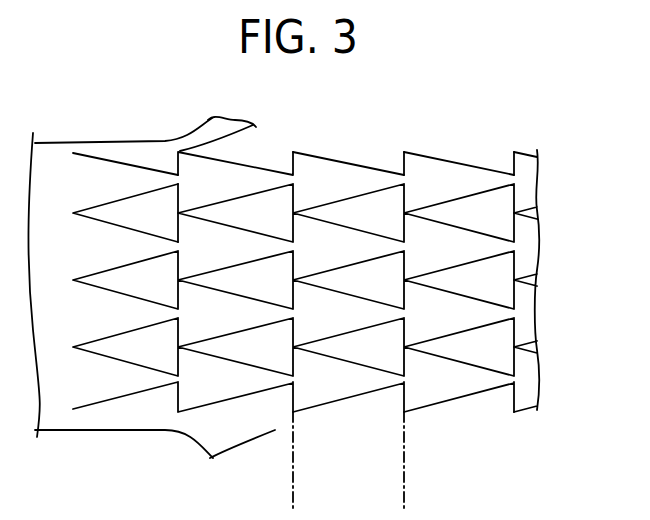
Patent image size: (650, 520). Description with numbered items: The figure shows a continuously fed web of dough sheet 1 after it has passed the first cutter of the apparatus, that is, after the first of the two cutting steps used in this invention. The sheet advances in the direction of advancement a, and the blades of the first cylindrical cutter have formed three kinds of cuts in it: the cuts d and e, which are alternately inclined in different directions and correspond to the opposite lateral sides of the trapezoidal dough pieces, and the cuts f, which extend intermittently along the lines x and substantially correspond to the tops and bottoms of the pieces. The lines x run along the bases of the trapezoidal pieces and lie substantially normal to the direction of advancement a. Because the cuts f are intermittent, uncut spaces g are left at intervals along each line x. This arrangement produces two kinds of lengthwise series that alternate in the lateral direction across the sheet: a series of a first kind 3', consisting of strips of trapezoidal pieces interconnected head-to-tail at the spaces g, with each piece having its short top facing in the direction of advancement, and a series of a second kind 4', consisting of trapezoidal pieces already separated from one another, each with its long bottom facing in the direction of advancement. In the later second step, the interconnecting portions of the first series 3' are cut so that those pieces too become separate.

The body 1 is at (58, 417).
The cut d is at (102, 160).
The cut e is at (87, 208).
The cut f is at (178, 197).
The space g is at (292, 181).
The series of a first kind 3' is at (459, 139).
The series of a second kind 4' is at (534, 281).
The direction of advancement a is at (480, 281).
The line x is at (437, 467).